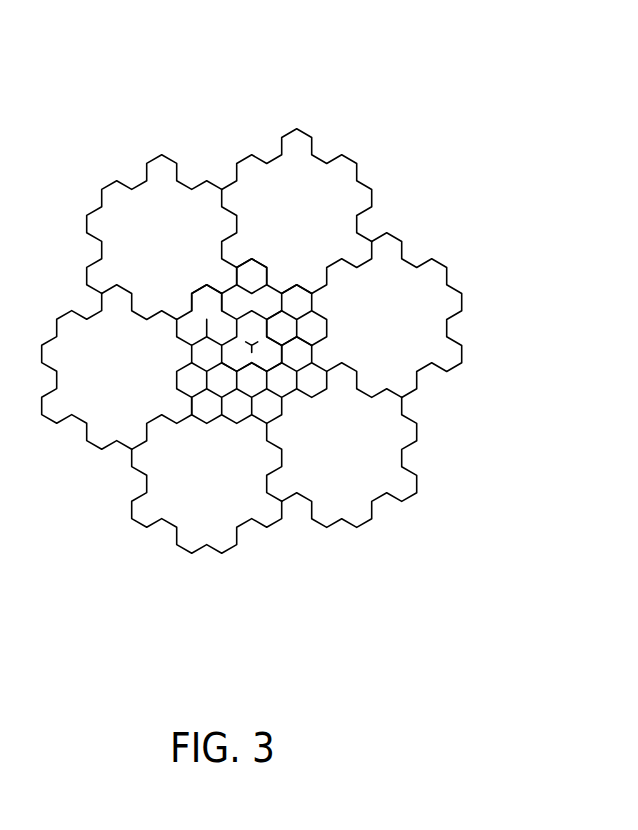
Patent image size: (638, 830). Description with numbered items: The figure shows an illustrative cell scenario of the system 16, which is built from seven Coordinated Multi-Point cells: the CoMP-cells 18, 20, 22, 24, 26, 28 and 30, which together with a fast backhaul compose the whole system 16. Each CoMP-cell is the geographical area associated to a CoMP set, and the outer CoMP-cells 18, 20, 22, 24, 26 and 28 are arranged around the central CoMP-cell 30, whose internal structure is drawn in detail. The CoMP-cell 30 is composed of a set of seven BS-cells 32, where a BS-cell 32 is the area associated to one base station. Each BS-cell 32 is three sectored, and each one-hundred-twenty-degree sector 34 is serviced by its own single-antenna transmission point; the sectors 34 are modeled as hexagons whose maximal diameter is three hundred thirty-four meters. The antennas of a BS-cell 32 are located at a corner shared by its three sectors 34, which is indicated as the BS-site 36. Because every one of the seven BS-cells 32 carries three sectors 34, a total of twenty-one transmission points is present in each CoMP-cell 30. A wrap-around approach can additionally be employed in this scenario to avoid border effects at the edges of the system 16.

The system 16 is at (92, 38).
The CoMP-cell 18 is at (117, 181).
The CoMP-cell 20 is at (327, 164).
The CoMP-cell 22 is at (447, 268).
The CoMP-cell 24 is at (417, 423).
The CoMP-cell 26 is at (222, 553).
The CoMP-cell 28 is at (57, 423).
The CoMP-cell 30 is at (237, 359).
The BS-cell 32 is at (208, 302).
The sector 34 is at (303, 305).
The BS-site 36 is at (241, 358).